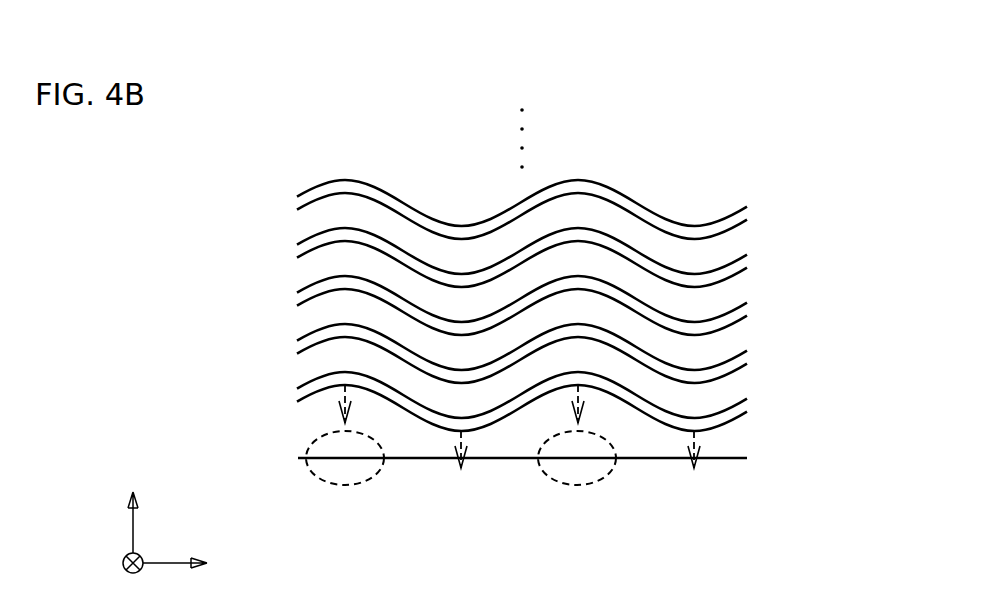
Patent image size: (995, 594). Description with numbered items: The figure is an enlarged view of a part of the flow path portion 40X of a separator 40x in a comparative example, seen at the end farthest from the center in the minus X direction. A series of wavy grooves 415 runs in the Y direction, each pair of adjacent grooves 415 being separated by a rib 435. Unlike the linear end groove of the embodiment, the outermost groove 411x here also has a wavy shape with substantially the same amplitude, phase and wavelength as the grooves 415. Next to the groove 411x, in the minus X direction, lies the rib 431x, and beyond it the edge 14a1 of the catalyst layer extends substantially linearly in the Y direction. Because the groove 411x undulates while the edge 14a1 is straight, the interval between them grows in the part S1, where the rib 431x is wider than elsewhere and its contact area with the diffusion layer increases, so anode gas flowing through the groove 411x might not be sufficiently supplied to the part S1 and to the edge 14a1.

The separator 40x is at (763, 102).
The flow path portion 40X is at (798, 180).
The grooves 415 is at (750, 205).
The groove 411x is at (750, 397).
The rib 435 is at (308, 224).
The rib 431x is at (309, 430).
The edge 14a1 is at (447, 459).
The part S1 is at (346, 486).